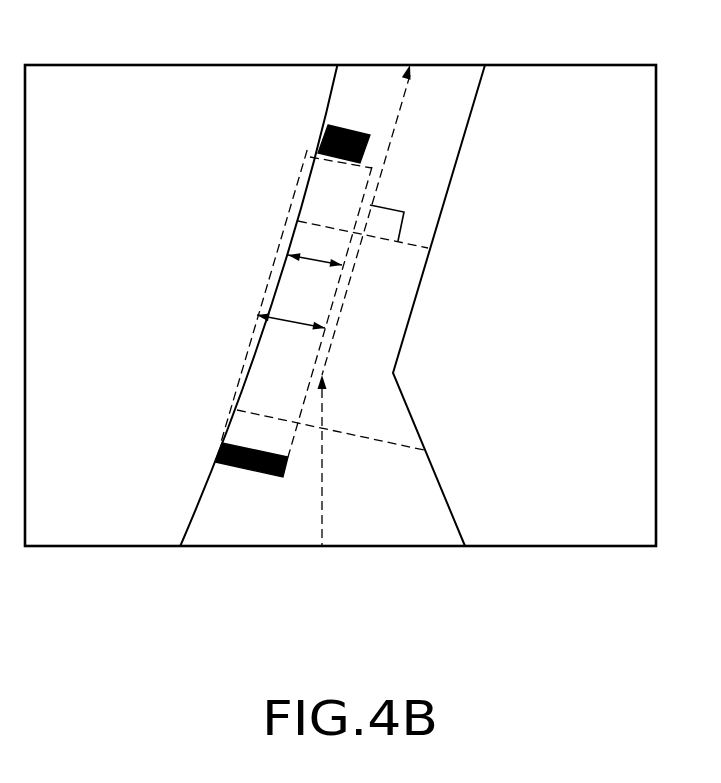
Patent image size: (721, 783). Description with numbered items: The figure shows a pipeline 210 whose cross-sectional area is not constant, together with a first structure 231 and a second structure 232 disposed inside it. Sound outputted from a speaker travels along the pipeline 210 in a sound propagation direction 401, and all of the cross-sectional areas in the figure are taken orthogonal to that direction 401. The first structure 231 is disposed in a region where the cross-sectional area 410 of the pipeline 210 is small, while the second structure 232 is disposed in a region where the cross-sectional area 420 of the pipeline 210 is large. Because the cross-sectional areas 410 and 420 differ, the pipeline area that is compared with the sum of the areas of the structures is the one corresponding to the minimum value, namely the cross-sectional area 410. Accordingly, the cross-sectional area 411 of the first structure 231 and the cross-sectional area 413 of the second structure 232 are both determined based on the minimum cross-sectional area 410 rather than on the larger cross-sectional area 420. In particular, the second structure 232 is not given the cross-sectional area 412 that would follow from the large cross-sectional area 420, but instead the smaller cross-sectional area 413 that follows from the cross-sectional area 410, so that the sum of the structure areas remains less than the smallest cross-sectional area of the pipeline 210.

The pipeline 210 is at (450, 70).
The first structure 231 is at (323, 134).
The second structure 232 is at (222, 447).
The sound propagation direction 401 is at (323, 500).
The cross-sectional area of the pipeline 410 is at (402, 244).
The cross-sectional area of the first structure 411 is at (343, 163).
The cross-sectional area of the second structure based on the large pipeline area 412 is at (285, 323).
The cross-sectional area of the second structure based on the minimum pipeline area 413 is at (312, 264).
The cross-sectional area of the pipeline in the large region 420 is at (368, 438).